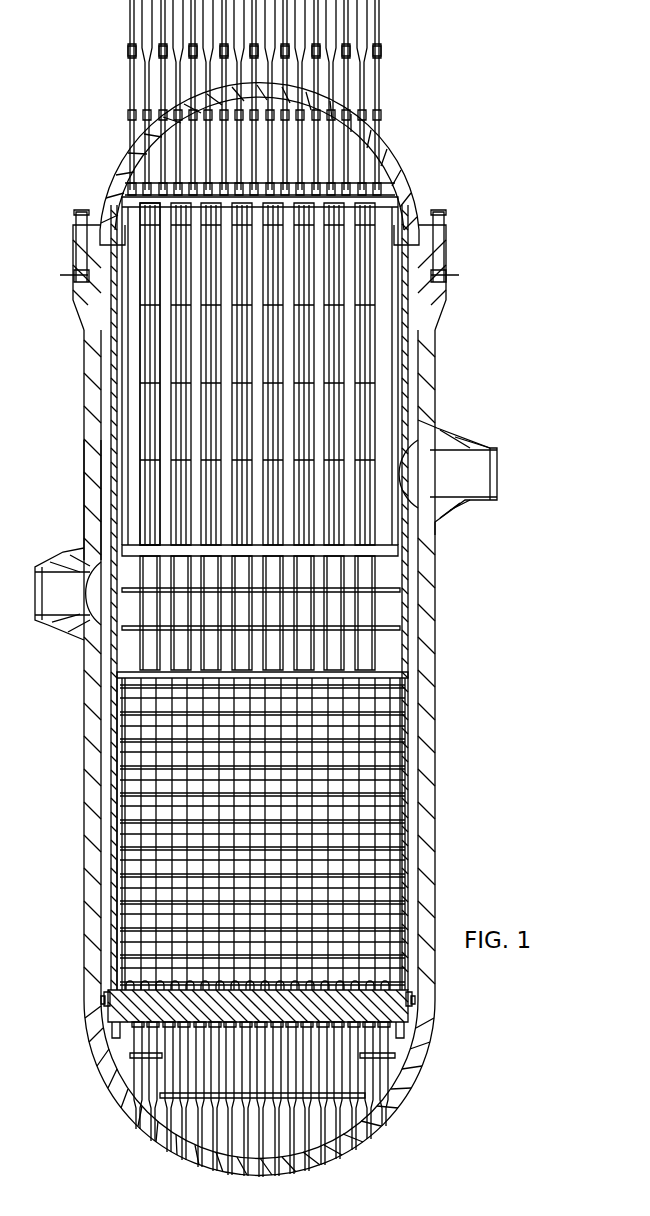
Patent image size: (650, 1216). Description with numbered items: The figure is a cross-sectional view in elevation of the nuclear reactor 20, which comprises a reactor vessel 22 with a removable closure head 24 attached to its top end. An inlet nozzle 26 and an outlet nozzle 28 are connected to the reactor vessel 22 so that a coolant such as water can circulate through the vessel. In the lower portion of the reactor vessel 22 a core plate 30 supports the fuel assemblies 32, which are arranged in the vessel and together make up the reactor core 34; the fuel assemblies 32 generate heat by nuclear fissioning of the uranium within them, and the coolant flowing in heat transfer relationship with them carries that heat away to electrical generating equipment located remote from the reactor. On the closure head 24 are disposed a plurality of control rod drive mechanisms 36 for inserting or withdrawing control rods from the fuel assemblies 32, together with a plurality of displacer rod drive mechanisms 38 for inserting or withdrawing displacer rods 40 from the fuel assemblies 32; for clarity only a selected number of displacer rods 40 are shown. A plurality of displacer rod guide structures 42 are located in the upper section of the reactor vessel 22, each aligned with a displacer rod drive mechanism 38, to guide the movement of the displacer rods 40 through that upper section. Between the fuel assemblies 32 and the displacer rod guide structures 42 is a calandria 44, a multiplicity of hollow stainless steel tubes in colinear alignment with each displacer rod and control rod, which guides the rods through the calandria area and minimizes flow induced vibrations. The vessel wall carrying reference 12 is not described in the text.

The reactor vessel 12 is at (82, 482).
The nuclear reactor 20 is at (485, 388).
The reactor vessel 22 is at (423, 404).
The closure head 24 is at (110, 172).
The inlet nozzle 26 is at (467, 445).
The outlet nozzle 28 is at (40, 620).
The core plate 30 is at (373, 1013).
The fuel assemblies 32 is at (370, 732).
The reactor core 34 is at (192, 832).
The control rod drive mechanisms 36 is at (146, 10).
The displacer rod drive mechanisms 38 is at (132, 31).
The displacer rods 40 is at (147, 366).
The displacer rod guide structures 42 is at (140, 334).
The calandria 44 is at (314, 621).